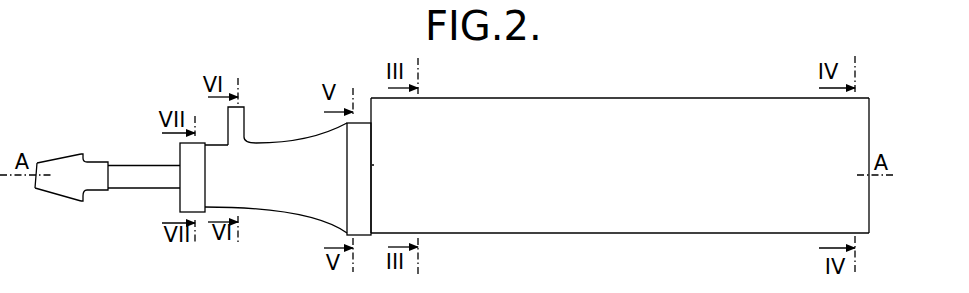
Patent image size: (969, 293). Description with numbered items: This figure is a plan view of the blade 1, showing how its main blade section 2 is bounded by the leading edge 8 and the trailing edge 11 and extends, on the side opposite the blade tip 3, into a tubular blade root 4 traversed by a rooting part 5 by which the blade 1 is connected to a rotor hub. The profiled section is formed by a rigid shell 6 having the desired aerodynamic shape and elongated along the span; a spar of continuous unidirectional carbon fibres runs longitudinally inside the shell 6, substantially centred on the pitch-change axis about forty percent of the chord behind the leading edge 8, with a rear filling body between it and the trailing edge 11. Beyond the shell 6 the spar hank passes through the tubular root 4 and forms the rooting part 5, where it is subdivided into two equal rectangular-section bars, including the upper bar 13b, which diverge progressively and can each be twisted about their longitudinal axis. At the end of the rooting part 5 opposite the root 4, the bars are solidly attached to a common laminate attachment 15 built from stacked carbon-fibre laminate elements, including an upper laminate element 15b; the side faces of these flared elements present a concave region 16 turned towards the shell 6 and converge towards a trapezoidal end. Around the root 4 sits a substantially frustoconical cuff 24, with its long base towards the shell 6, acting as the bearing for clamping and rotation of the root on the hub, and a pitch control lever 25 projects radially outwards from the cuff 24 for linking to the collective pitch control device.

The blade 1 is at (627, 147).
The main blade section 2 is at (760, 98).
The blade tip 3 is at (869, 118).
The tubular blade root 4 is at (282, 142).
The rooting part 5 is at (143, 191).
The rigid shell 6 is at (635, 142).
The leading edge 8 is at (653, 233).
The trailing edge 11 is at (730, 97).
The bar 13b is at (125, 178).
The laminate attachment 15 is at (62, 152).
The upper laminate element 15b is at (63, 186).
The concave region 16 is at (94, 159).
The cuff 24 is at (277, 192).
The pitch control lever 25 is at (237, 123).